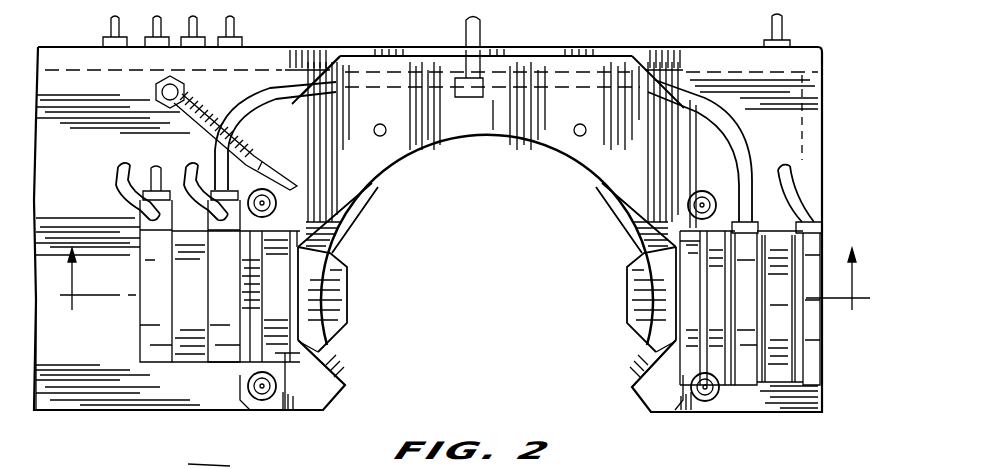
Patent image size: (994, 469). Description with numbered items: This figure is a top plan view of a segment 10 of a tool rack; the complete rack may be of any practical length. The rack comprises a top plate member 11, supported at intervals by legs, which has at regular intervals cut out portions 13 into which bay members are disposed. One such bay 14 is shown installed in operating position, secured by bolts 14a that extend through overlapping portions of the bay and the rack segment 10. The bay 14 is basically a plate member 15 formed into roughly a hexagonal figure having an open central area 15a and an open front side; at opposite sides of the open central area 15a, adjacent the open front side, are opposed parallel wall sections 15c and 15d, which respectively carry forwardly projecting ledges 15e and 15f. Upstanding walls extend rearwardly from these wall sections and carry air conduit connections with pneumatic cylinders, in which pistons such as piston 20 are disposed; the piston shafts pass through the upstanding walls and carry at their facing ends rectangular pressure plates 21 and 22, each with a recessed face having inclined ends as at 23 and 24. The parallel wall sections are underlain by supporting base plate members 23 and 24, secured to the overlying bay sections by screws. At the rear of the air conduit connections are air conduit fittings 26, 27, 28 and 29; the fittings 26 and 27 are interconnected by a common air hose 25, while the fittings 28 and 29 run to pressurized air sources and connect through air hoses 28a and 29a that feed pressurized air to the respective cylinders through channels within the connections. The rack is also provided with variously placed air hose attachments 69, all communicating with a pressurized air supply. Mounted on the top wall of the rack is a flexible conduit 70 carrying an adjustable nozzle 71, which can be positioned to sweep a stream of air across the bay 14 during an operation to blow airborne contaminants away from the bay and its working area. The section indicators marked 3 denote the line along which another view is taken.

The segment of a tool rack 10 is at (78, 42).
The top plate member 11 is at (95, 395).
The cut out portions 13 is at (310, 60).
The bay 14 is at (645, 58).
The bolts 14a is at (702, 190).
The plate member 15 is at (452, 229).
The open center or central area 15a is at (520, 290).
The parallel wall section 15c is at (250, 360).
The parallel wall section 15d is at (716, 365).
The forwardly projecting ledge 15e is at (330, 252).
The forwardly projecting ledge 15f is at (638, 258).
The piston 20 is at (189, 465).
The pressure plate 21 is at (292, 370).
The pressure plate 22 is at (683, 370).
The inclined end / supporting base plate member 23 is at (336, 338).
The inclined end / supporting base plate member 24 is at (634, 345).
The common air hose 25 is at (480, 34).
The air conduit fitting 26 is at (210, 165).
The air conduit fitting 27 is at (756, 172).
The air conduit fitting 28 is at (142, 165).
The air hose 28a is at (118, 184).
The air conduit fitting 29 is at (822, 204).
The air hose 29a is at (824, 160).
The section line 3 is at (459, 294).
The air hose attachments 69 is at (230, 24).
The flexible conduit 70 is at (218, 112).
The adjustable nozzle 71 is at (288, 160).